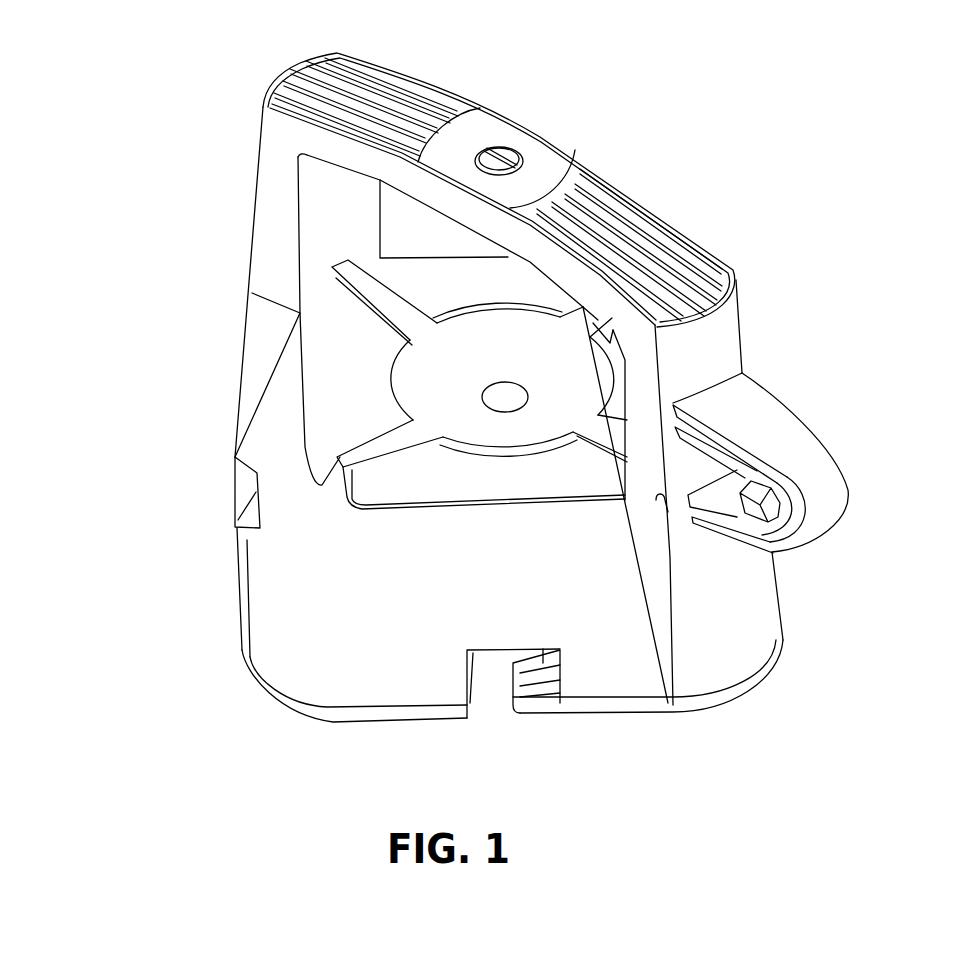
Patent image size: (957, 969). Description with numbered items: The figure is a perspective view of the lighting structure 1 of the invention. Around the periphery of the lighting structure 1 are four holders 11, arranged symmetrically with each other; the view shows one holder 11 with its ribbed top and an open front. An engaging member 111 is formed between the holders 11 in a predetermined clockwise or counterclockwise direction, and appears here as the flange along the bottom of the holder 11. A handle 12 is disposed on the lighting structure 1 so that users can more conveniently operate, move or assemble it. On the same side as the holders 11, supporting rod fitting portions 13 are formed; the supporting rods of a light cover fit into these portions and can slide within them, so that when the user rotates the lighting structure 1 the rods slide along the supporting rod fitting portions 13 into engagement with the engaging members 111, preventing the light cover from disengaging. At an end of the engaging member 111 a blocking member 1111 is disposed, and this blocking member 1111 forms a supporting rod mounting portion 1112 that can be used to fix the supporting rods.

The lighting structure 1 is at (214, 130).
The holder 11 is at (782, 663).
The handle 12 is at (607, 191).
The supporting rod fitting portion 13 is at (483, 647).
The engaging member 111 is at (583, 710).
The blocking member 1111 is at (532, 715).
The supporting rod mounting portion 1112 is at (509, 687).